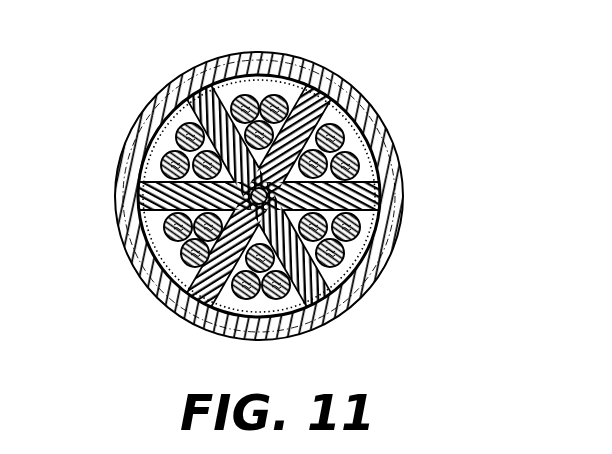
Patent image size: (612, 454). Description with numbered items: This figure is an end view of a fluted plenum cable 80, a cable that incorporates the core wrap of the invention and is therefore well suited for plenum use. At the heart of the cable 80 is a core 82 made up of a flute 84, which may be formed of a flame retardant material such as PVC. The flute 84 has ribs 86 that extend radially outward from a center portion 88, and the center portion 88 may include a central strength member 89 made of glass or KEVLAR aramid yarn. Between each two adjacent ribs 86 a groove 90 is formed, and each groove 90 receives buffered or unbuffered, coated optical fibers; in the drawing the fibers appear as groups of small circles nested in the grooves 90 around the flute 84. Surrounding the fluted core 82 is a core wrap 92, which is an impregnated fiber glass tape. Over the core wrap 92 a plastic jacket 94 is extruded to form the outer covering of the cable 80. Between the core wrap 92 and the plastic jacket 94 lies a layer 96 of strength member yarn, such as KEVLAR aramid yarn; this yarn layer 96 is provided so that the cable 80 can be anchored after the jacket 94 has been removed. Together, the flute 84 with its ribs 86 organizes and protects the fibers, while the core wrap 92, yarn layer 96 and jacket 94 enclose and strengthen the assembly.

The fluted plenum cable 80 is at (259, 196).
The core 82 is at (148, 219).
The flute 84 is at (383, 186).
The ribs 86 is at (292, 331).
The center portion 88 is at (203, 272).
The central strength member 89 is at (318, 66).
The groove 90 is at (366, 137).
The core wrap 92 is at (238, 56).
The plastic jacket 94 is at (368, 282).
The layer of strength member yarn 96 is at (163, 121).